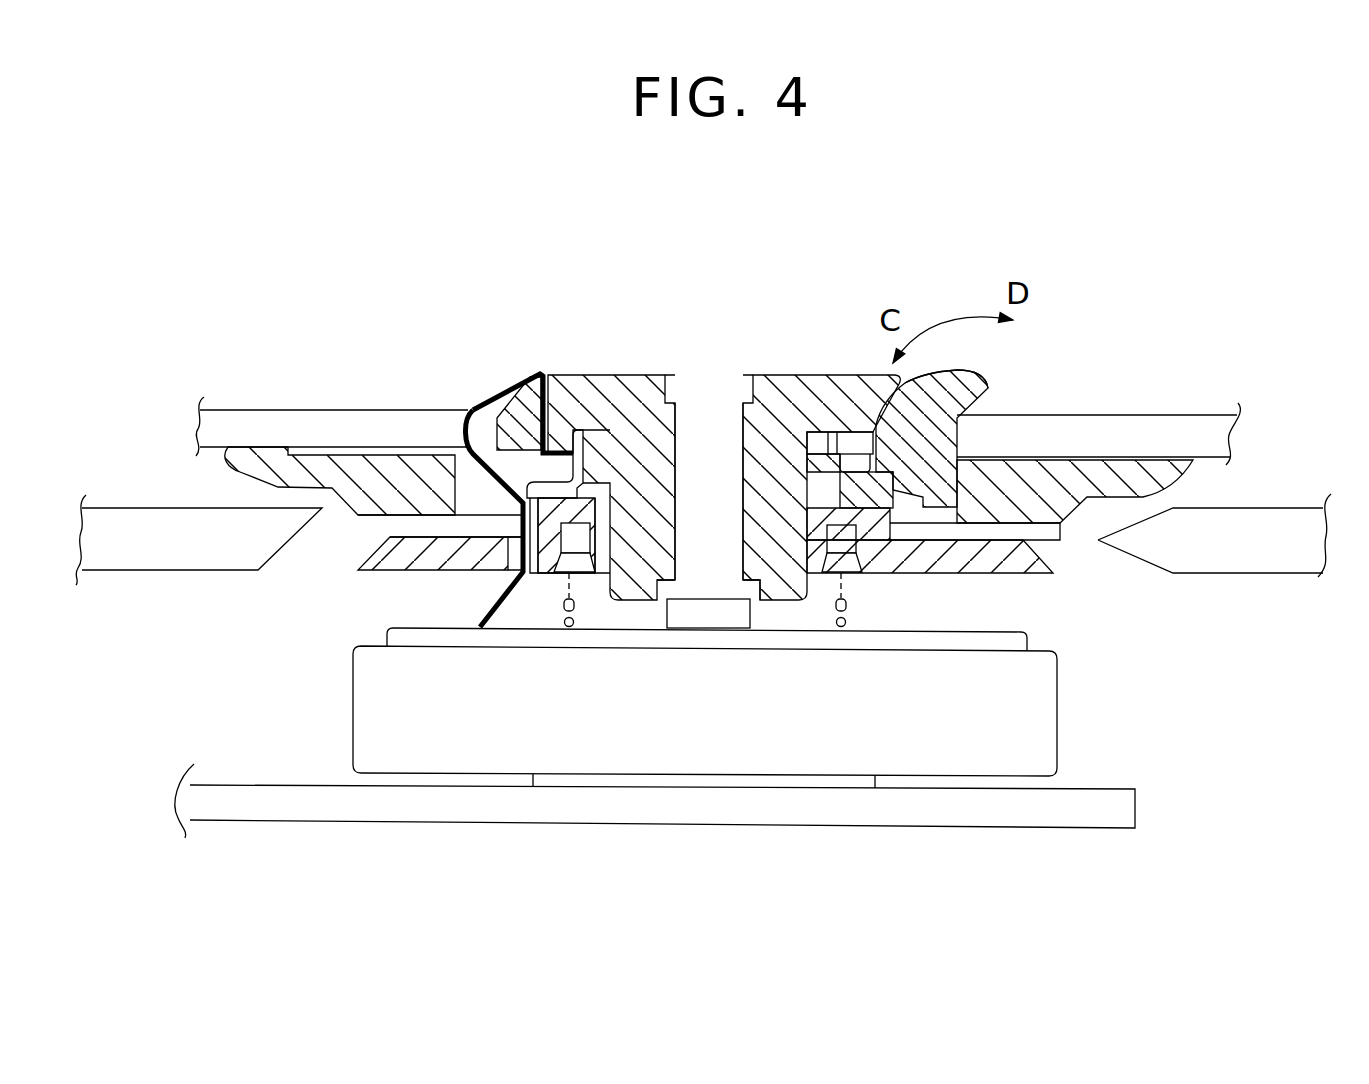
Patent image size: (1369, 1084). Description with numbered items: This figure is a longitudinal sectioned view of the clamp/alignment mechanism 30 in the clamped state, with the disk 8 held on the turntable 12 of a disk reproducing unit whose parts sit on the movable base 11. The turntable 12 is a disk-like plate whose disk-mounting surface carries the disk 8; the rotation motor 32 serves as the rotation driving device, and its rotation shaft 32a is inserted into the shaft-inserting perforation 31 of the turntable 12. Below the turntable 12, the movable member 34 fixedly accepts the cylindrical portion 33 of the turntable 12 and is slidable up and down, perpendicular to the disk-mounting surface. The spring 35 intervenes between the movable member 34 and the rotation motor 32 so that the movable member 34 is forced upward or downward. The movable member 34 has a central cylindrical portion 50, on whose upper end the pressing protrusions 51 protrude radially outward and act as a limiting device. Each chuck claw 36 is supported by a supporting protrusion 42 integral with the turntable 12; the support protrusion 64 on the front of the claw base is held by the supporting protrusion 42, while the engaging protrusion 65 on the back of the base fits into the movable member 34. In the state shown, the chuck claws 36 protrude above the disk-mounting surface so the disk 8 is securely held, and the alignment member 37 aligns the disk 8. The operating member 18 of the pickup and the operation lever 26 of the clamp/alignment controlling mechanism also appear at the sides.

The disk 8 is at (342, 410).
The movable base 11 is at (483, 805).
The turntable 12 is at (1165, 487).
The operating member 18 is at (140, 522).
The operation lever 26 is at (1277, 560).
The clamp/alignment mechanism 30 is at (485, 357).
The shaft-inserting perforation 31 is at (680, 375).
The rotation motor 32 is at (965, 757).
The rotation shaft 32a is at (712, 393).
The cylindrical portion 33 is at (783, 570).
The movable member 34 is at (390, 577).
The spring 35 is at (560, 592).
The chuck claw 36 is at (978, 378).
The alignment member 37 is at (480, 392).
The supporting protrusion 42 is at (937, 512).
The cylindrical portion 50 is at (593, 560).
The pressing protrusion 51 is at (857, 460).
The support protrusion 64 is at (967, 488).
The engaging protrusion 65 is at (837, 483).